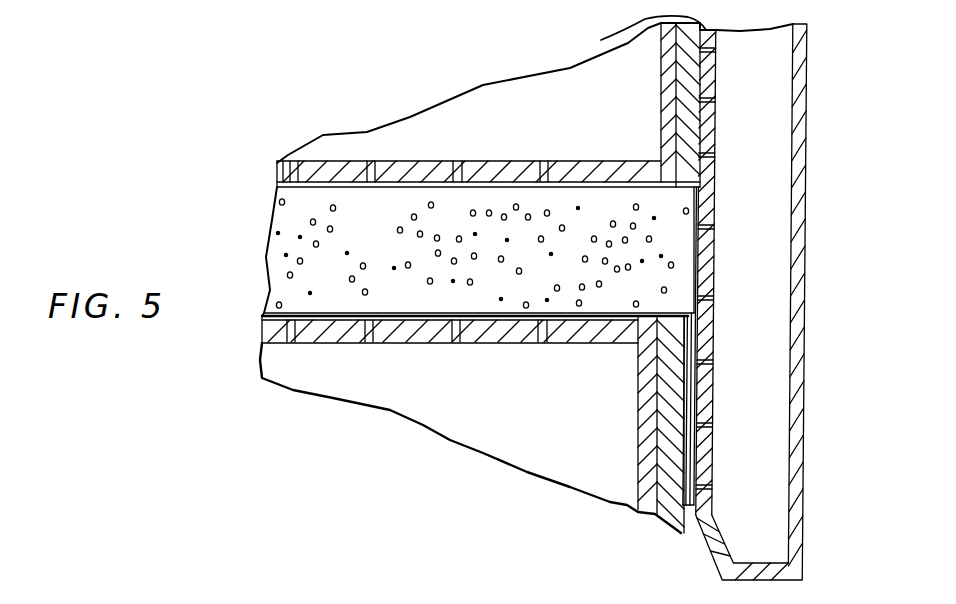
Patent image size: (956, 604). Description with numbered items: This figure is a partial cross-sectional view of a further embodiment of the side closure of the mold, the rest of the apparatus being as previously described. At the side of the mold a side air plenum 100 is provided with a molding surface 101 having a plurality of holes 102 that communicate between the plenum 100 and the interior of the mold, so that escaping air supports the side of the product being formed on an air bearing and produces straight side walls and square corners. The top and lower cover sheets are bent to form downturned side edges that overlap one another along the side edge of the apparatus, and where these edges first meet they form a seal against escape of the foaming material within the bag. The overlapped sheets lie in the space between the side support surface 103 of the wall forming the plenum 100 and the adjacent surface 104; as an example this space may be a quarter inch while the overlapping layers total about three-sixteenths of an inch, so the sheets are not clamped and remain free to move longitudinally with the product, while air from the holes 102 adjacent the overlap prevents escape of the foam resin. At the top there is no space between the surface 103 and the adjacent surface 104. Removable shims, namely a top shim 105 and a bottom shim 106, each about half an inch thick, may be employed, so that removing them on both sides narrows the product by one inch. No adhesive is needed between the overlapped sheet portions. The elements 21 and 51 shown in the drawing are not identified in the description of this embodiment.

The side air plenum 100 is at (784, 140).
The molding surface 101 is at (697, 250).
The holes 102 is at (712, 228).
The side support surface 103 is at (655, 554).
The adjacent surface 104 is at (711, 85).
The top shim 105 is at (695, 66).
The bottom shim 106 is at (655, 385).
The sheet element 21 is at (690, 370).
The thin sheet 51 is at (697, 400).